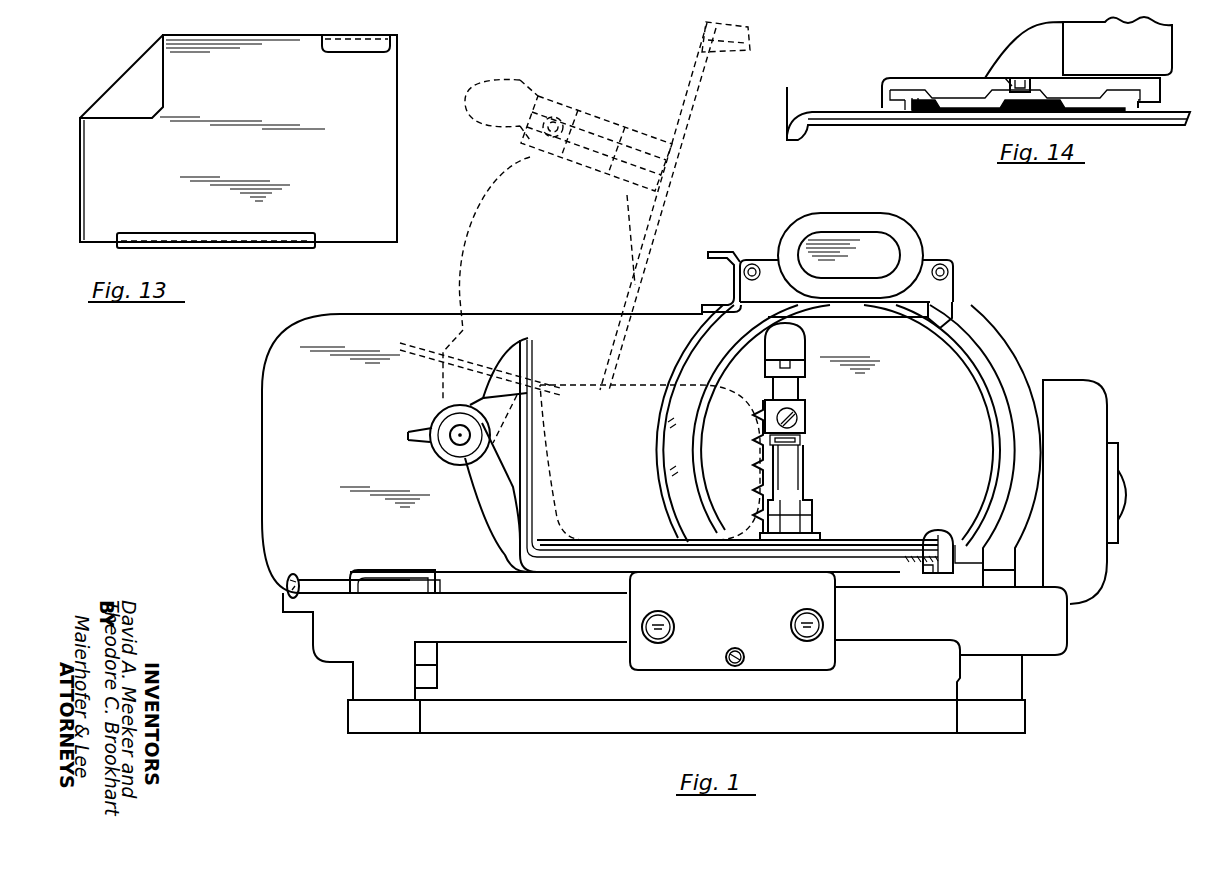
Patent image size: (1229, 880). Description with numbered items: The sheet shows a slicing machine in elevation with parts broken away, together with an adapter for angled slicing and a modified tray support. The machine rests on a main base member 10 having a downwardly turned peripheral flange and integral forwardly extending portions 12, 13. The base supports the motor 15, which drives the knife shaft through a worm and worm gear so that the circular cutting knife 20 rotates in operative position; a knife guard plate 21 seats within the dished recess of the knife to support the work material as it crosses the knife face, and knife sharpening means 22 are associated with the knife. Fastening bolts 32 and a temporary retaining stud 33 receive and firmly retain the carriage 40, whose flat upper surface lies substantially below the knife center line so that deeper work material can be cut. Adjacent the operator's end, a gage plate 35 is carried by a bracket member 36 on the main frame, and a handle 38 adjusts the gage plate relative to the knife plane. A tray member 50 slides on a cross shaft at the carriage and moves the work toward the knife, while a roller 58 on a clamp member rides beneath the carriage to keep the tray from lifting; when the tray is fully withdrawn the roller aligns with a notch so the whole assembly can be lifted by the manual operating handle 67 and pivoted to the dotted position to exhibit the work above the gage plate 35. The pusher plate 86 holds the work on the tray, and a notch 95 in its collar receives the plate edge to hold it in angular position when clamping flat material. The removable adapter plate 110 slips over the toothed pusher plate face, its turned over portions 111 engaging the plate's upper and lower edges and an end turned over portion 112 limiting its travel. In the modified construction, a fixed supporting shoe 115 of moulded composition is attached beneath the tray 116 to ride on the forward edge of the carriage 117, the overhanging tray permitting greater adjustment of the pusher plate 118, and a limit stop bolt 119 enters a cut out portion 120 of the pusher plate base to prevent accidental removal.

In FIG. 1, the main base member 10 is at (345, 720).
In FIG. 1, the forwardly extending portion 12 is at (400, 728).
In FIG. 1, the forwardly extending portion 13 is at (997, 722).
In FIG. 1, the motor 15 is at (1097, 410).
In FIG. 1, the circular cutting knife 20 is at (970, 352).
In FIG. 1, the knife guard plate 21 is at (955, 384).
In FIG. 1, the knife sharpening means 22 is at (905, 238).
In FIG. 1, the fastening bolts 32 is at (645, 637).
In FIG. 1, the temporary retaining stud 33 is at (745, 665).
In FIG. 1, the gage plate 35 is at (461, 322).
In FIG. 1, the bracket member 36 is at (455, 572).
In FIG. 1, the handle 38 is at (285, 586).
In FIG. 1, the carriage 40 is at (538, 560).
In FIG. 1, the tray member 50 is at (883, 542).
In FIG. 1, the roller 58 is at (928, 570).
In FIG. 1, the manual operating handle 67 is at (795, 343).
In FIG. 1, the pusher plate 86 is at (775, 462).
In FIG. 1, the notch 95 is at (797, 436).
In FIG. 13, the removable adapter plate 110 is at (398, 143).
In FIG. 13, the turned over portions 111 is at (385, 45).
In FIG. 13, the turned over portion 112 is at (148, 73).
In FIG. 14, the fixed supporting shoe 115 is at (1113, 115).
In FIG. 14, the tray 116 is at (902, 92).
In FIG. 14, the carriage 117 is at (841, 125).
In FIG. 14, the pusher plate 118 is at (1177, 37).
In FIG. 14, the bolt 119 is at (1012, 78).
In FIG. 14, the cut out portion 120 is at (1017, 66).